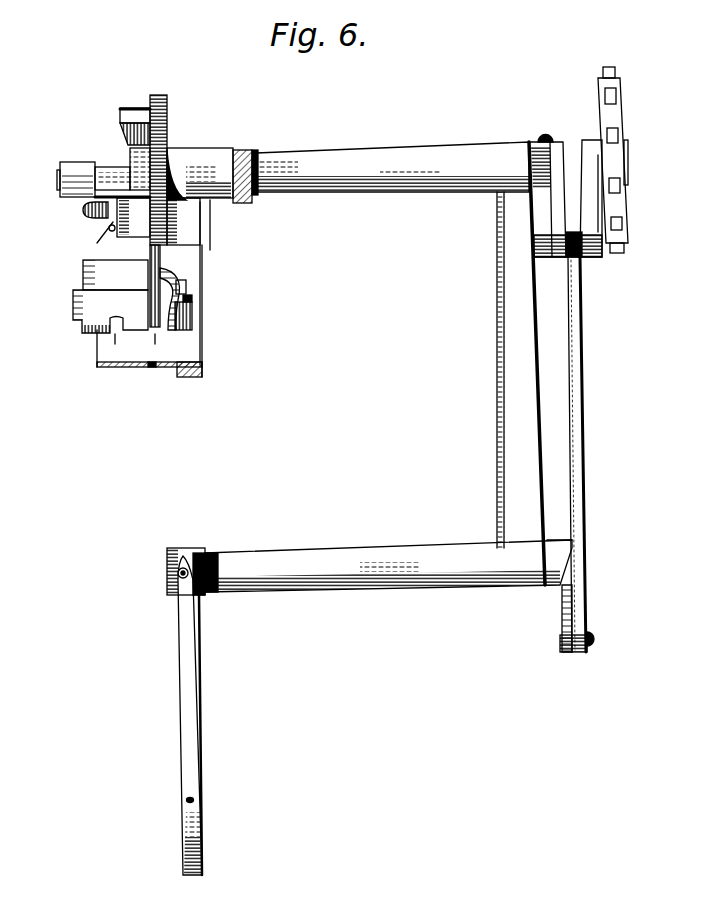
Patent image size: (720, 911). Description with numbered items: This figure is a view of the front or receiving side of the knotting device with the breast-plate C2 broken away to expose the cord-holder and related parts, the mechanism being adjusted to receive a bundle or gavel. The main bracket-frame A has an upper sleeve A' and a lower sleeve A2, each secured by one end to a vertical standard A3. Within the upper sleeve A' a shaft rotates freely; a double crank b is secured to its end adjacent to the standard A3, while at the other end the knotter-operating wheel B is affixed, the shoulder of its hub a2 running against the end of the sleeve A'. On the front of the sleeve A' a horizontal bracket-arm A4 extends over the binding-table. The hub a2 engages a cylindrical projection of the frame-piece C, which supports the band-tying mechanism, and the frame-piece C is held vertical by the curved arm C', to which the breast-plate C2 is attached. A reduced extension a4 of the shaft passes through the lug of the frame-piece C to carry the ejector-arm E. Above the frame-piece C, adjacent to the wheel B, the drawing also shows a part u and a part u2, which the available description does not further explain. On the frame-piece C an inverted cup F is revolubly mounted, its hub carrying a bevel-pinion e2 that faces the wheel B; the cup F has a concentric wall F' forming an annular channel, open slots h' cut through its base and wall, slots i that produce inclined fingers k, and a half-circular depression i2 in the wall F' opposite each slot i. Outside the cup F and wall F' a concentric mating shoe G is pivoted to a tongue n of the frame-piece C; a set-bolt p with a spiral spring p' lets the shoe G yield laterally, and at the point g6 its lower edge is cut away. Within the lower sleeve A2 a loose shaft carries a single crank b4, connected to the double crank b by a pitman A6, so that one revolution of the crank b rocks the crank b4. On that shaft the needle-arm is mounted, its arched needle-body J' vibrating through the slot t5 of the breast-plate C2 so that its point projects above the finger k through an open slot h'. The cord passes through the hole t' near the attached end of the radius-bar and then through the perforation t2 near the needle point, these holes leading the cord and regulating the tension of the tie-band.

The main bracket-frame A is at (388, 362).
The upper sleeve A' is at (390, 158).
The lower sleeve A2 is at (402, 550).
The vertical standard A3 is at (520, 382).
The horizontal bracket-arm A4 is at (242, 150).
The pitman A6 is at (578, 380).
The knotter-operating wheel B is at (167, 130).
The double crank b is at (558, 212).
The single crank b4 is at (564, 600).
The cap u2 is at (120, 113).
The wedge u is at (122, 130).
The frame-piece C is at (126, 164).
The reduced extension of the shaft a4 is at (60, 178).
The ejector-arm E is at (68, 197).
The hub of the knotter-operating wheel a2 is at (208, 150).
The set-bolt p is at (87, 214).
The spiral spring p' is at (111, 219).
The tongue n is at (95, 239).
The bevel-pinion e2 is at (185, 232).
The shoe G is at (110, 296).
The cup F is at (188, 289).
The finger k is at (186, 286).
The half-circular depression i2 is at (192, 298).
The slot i is at (192, 310).
The concentric wall F' is at (207, 283).
The cut-away point of the shoe g6 is at (100, 334).
The open slot h' is at (134, 345).
The breast-plate C2 is at (118, 367).
The slot t5 is at (150, 379).
The curved arm C' is at (196, 320).
The perforation t2 is at (177, 572).
The needle-body J' is at (178, 715).
The hole t' is at (204, 793).